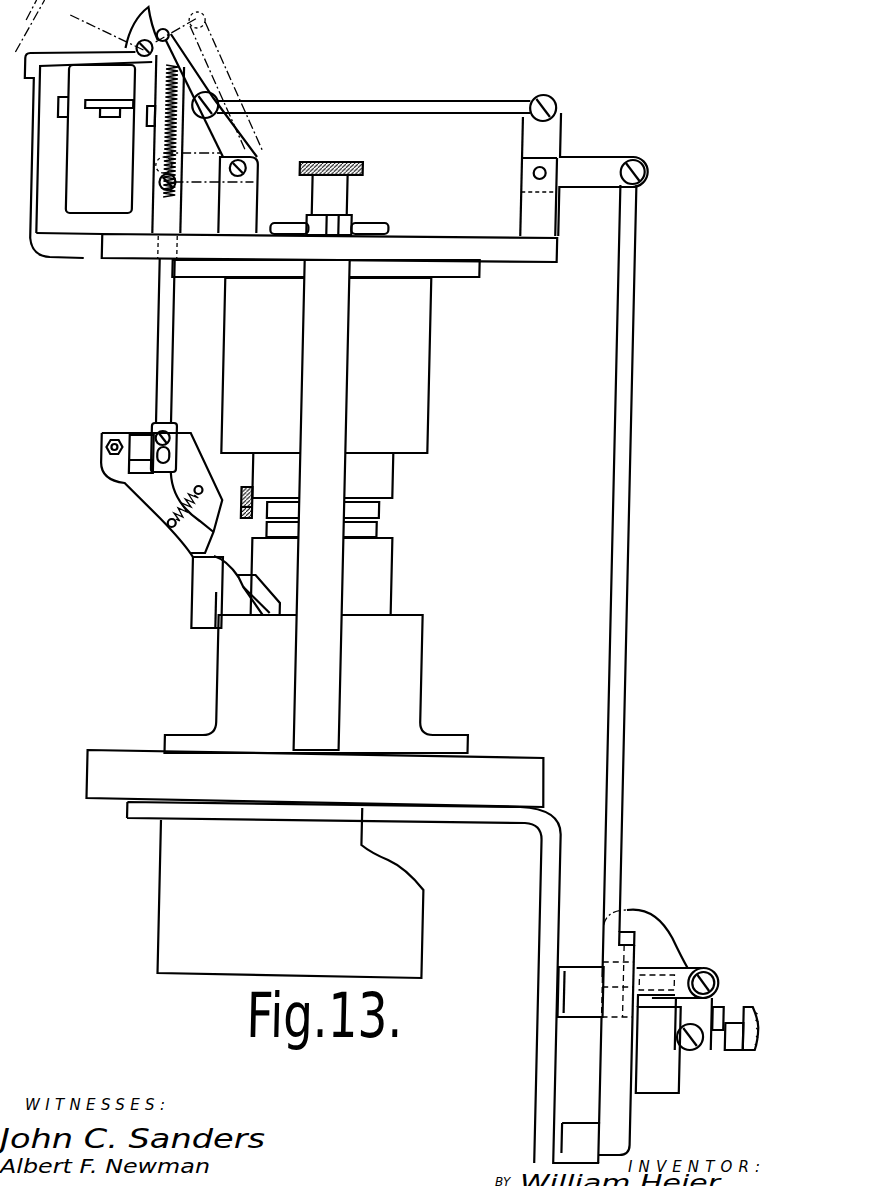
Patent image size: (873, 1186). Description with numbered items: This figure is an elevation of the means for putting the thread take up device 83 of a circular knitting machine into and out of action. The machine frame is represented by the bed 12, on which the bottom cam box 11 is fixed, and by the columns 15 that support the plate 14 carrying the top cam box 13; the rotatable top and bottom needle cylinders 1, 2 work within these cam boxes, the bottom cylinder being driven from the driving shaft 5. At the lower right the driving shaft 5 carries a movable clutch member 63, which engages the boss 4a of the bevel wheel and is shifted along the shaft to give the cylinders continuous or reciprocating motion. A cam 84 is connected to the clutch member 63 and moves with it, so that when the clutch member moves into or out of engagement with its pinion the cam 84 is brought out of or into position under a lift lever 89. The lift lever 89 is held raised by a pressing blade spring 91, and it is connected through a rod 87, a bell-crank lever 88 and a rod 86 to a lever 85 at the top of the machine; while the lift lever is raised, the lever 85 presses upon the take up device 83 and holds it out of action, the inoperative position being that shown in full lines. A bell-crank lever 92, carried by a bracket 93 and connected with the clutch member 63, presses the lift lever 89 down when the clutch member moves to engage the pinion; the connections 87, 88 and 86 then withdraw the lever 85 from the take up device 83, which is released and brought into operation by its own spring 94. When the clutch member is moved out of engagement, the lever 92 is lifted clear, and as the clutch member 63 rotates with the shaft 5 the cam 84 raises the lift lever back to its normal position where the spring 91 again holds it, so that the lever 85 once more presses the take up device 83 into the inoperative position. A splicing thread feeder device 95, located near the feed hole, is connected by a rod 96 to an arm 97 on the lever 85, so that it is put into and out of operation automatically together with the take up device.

The top needle cylinder 1 is at (378, 492).
The bottom needle cylinder 2 is at (378, 580).
The boss of the bevel wheel 4a is at (680, 1026).
The driving shaft 5 is at (753, 1052).
The bottom cam box 11 is at (318, 684).
The machine bed 12 is at (315, 778).
The top cam box 13 is at (409, 397).
The plate 14 is at (436, 249).
The columns 15 is at (324, 456).
The clutch member 63 is at (671, 1094).
The thread take up device 83 is at (59, 52).
The cam 84 is at (613, 968).
The lever 85 is at (203, 84).
The rod 86 is at (347, 107).
The rod 87 is at (624, 585).
The bell-crank lever 88 is at (578, 167).
The lift lever 89 is at (641, 932).
The pressing blade spring 91 is at (616, 1076).
The bell-crank lever 92 is at (671, 949).
The bracket 93 is at (590, 1005).
The spring 94 is at (166, 136).
The splicing thread feeder device 95 is at (203, 483).
The rod 96 is at (162, 363).
The arm 97 is at (194, 180).